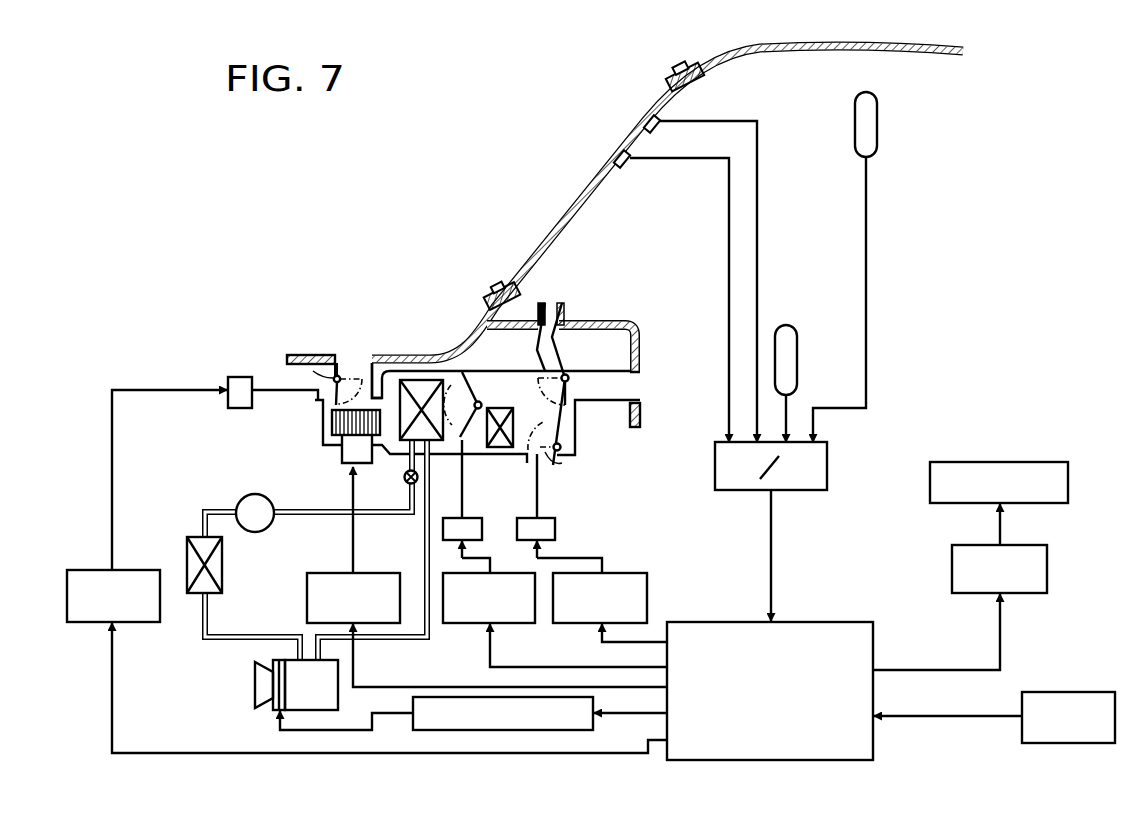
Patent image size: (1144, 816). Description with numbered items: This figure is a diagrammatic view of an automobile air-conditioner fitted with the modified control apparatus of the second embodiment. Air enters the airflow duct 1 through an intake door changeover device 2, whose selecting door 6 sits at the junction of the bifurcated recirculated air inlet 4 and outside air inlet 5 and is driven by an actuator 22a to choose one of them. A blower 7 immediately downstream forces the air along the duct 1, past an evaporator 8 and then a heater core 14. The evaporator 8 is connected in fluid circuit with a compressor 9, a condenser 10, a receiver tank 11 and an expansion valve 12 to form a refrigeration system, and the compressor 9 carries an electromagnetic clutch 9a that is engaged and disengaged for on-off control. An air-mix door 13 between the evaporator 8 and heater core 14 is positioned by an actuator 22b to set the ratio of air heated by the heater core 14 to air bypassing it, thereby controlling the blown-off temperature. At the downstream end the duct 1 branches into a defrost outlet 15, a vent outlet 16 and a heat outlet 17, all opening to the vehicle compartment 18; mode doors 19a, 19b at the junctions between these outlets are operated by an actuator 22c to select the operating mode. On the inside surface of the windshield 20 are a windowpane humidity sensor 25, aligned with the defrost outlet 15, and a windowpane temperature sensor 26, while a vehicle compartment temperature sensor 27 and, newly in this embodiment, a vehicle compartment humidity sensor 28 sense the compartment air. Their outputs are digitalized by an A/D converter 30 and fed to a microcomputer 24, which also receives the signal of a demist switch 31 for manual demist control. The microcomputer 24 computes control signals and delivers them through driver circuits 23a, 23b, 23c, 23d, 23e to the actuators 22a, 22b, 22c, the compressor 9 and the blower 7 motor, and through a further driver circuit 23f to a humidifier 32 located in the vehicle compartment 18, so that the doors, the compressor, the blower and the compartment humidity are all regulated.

The airflow duct 1 is at (510, 368).
The intake door changeover device 2 is at (348, 358).
The recirculated air inlet 4 is at (317, 396).
The outside air inlet 5 is at (360, 356).
The selecting door 6 is at (315, 363).
The blower 7 is at (330, 427).
The evaporator 8 is at (415, 383).
The compressor 9 is at (333, 695).
The electromagnetic clutch 9a is at (253, 688).
The condenser 10 is at (188, 543).
The receiver tank 11 is at (252, 493).
The expansion valve 12 is at (404, 481).
The air-mix door 13 is at (452, 383).
The heater core 14 is at (497, 447).
The defrost outlet 15 is at (556, 303).
The vent outlet 16 is at (638, 392).
The heat outlet 17 is at (544, 467).
The vehicle compartment 18 is at (757, 73).
The mode door 19a is at (567, 376).
The mode door 19b is at (562, 463).
The windshield 20 is at (558, 213).
The actuator 22a is at (237, 377).
The actuator 22b is at (473, 518).
The actuator 22c is at (557, 528).
The driver circuit 23a is at (80, 570).
The driver circuit 23b is at (522, 624).
The driver circuit 23c is at (640, 573).
The driver circuit 23d is at (323, 572).
The driver circuit 23e is at (587, 730).
The driver circuit 23f is at (958, 545).
The microcomputer 24 is at (832, 624).
The windowpane humidity sensor 25 is at (615, 148).
The windowpane temperature sensor 26 is at (643, 110).
The vehicle compartment temperature sensor 27 is at (793, 325).
The vehicle compartment humidity sensor 28 is at (878, 138).
The A/D converter 30 is at (820, 490).
The demist switch 31 is at (1092, 692).
The humidifier 32 is at (1035, 462).